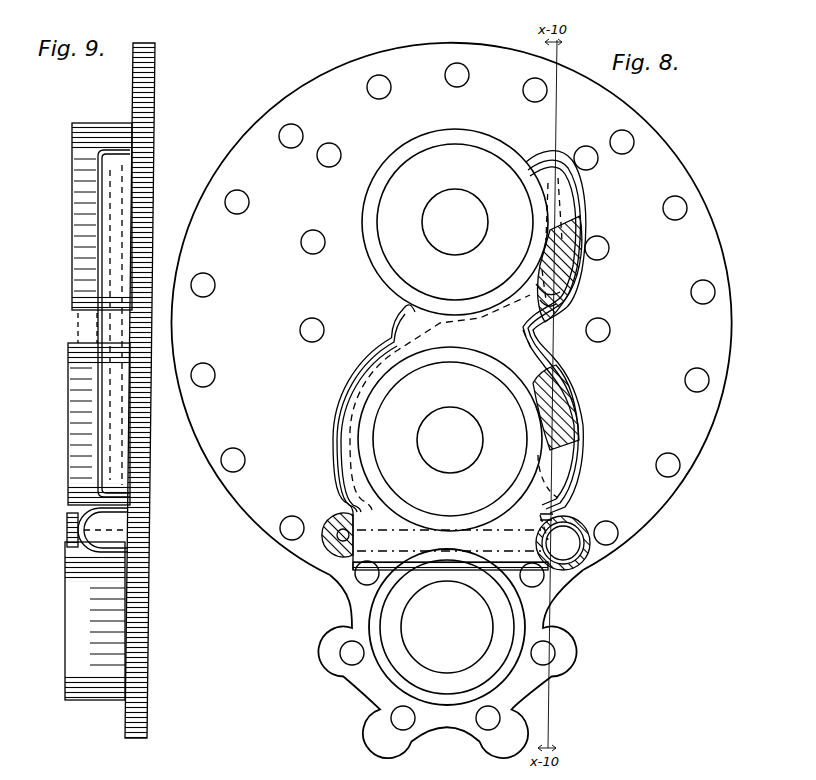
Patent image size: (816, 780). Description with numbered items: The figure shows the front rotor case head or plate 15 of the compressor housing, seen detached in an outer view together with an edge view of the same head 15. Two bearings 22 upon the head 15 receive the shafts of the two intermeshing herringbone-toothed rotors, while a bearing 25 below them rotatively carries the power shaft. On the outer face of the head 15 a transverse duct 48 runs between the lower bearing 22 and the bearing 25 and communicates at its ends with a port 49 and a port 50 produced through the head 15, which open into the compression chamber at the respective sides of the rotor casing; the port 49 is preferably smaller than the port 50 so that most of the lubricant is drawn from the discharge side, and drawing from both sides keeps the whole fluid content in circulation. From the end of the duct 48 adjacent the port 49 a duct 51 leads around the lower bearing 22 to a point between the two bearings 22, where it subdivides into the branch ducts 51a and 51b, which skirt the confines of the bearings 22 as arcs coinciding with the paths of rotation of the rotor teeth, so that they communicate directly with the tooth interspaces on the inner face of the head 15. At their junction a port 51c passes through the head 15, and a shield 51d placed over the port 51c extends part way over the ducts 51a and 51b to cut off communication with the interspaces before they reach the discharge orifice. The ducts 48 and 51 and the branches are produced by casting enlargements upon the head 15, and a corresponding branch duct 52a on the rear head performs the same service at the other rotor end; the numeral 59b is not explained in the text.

In FIG. 9, the front head 15 is at (146, 80).
In FIG. 8, the front head 15 is at (668, 180).
In FIG. 9, the bearings 22 is at (88, 122).
In FIG. 8, the bearings 22 is at (366, 200).
In FIG. 9, the bearing 25 is at (78, 644).
In FIG. 8, the bearing 25 is at (406, 667).
In FIG. 9, the transverse duct 48 is at (112, 525).
In FIG. 8, the transverse duct 48 is at (362, 540).
In FIG. 8, the port 49 is at (342, 537).
In FIG. 8, the port 50 is at (572, 532).
In FIG. 8, the duct 51 is at (378, 374).
In FIG. 8, the branch duct 51a is at (578, 206).
In FIG. 8, the branch duct 51b is at (568, 380).
In FIG. 8, the port 51c is at (550, 320).
In FIG. 8, the shield 51d is at (548, 282).
In FIG. 8, the branch duct 52a is at (562, 294).
In FIG. 9, the passage 59b is at (118, 194).